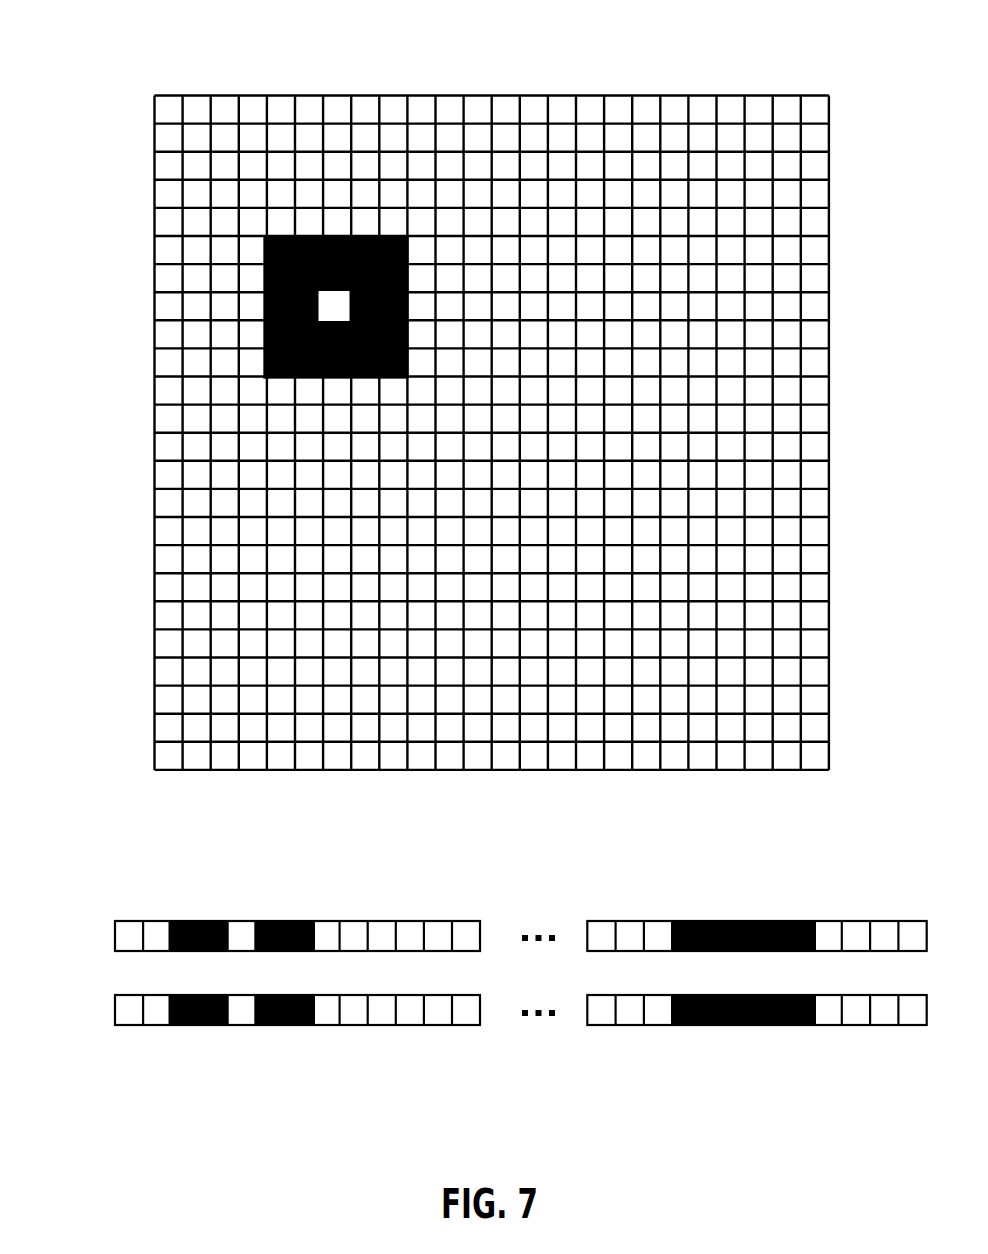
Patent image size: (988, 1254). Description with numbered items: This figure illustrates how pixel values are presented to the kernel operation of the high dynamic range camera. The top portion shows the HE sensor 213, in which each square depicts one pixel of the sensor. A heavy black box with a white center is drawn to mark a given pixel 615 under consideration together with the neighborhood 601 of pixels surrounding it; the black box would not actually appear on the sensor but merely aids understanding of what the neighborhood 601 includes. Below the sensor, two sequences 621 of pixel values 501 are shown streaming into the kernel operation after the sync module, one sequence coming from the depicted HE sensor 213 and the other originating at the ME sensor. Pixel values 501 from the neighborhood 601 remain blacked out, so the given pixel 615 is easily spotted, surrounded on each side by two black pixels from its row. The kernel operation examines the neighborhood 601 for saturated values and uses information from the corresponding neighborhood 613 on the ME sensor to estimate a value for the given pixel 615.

The HE sensor 213 is at (507, 93).
The neighborhood of pixels 601 is at (316, 236).
The given pixel 615 is at (330, 303).
The pixel values 501 is at (816, 880).
The sequences of pixel values 621 is at (82, 977).
The corresponding neighborhood 613 is at (718, 1027).